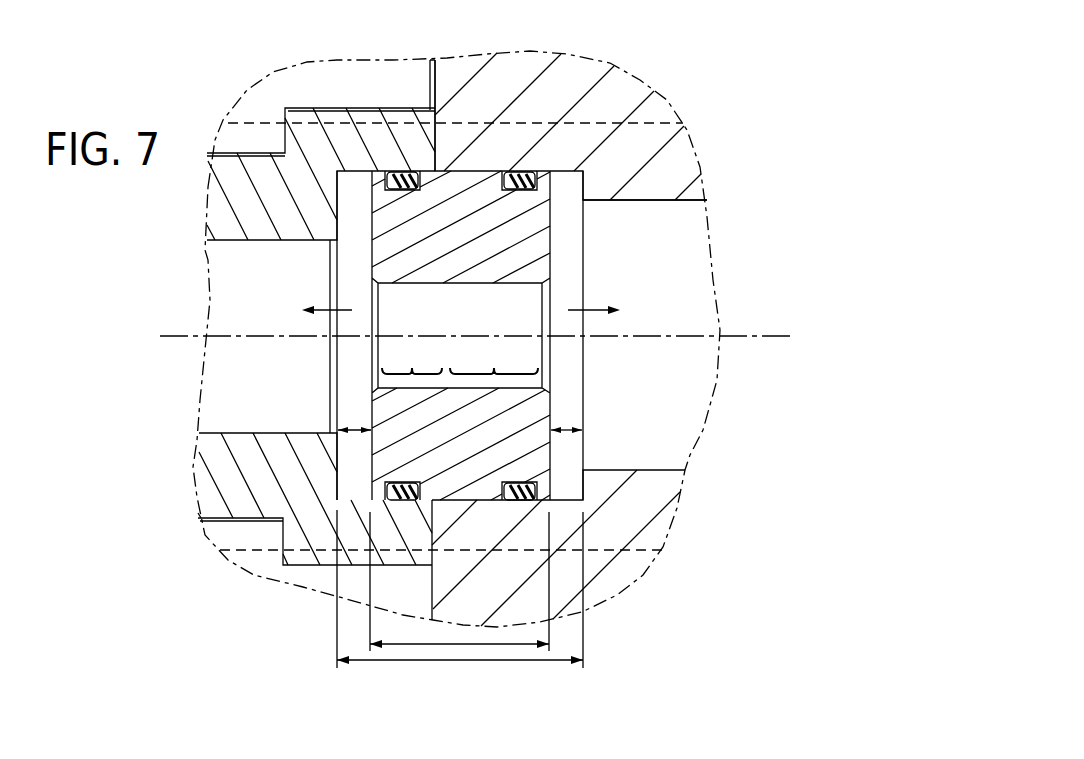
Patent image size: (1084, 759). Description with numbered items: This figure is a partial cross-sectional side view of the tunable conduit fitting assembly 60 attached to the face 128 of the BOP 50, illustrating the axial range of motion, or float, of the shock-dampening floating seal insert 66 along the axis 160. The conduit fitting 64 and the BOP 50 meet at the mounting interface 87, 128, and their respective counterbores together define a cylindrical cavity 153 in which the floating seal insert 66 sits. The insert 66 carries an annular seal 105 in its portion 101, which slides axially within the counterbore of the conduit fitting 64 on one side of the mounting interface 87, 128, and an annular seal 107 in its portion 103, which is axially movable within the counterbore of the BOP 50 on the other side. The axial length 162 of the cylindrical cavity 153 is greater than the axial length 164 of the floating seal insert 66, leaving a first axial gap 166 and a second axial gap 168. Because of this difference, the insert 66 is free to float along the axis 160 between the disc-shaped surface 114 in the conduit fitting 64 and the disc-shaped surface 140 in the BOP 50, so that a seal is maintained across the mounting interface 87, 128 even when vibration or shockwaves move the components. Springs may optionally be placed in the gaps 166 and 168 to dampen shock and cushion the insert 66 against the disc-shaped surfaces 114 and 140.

The BOP 50 is at (674, 100).
The conduit fitting assembly 60 is at (232, 98).
The conduit fitting 64 is at (183, 505).
The floating seal insert 66 is at (388, 250).
The mounting interface 87 is at (436, 135).
The portion 101 is at (412, 357).
The portion 103 is at (494, 356).
The annular seal 105 is at (400, 176).
The annular seal 107 is at (516, 177).
The disc-shaped surface 114 is at (338, 207).
The face 128 is at (430, 79).
The disc-shaped surface 140 is at (583, 184).
The cylindrical cavity 153 is at (593, 218).
The axis 160 is at (680, 333).
The axial length 162 is at (468, 661).
The axial length 164 is at (415, 643).
The first axial gap 166 is at (354, 425).
The second axial gap 168 is at (566, 425).